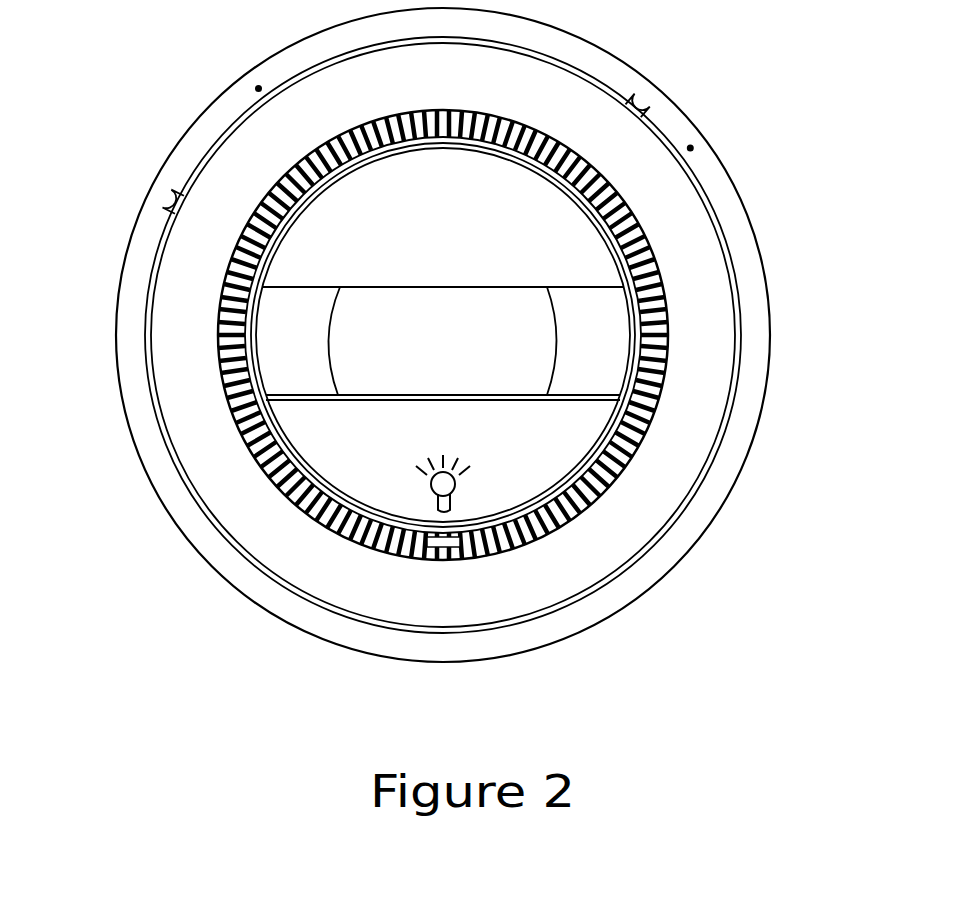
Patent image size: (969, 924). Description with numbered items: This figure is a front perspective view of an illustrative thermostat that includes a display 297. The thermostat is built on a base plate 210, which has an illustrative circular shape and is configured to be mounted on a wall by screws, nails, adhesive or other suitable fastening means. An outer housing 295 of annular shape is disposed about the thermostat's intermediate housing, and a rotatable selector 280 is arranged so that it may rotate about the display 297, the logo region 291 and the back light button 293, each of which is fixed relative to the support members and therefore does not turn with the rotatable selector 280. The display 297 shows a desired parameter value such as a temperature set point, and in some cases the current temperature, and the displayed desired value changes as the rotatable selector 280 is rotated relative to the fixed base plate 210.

The base plate 210 is at (750, 288).
The rotatable selector 280 is at (670, 370).
The logo region 291 is at (560, 227).
The back light button 293 is at (307, 437).
The outer housing 295 is at (672, 460).
The display 297 is at (393, 338).